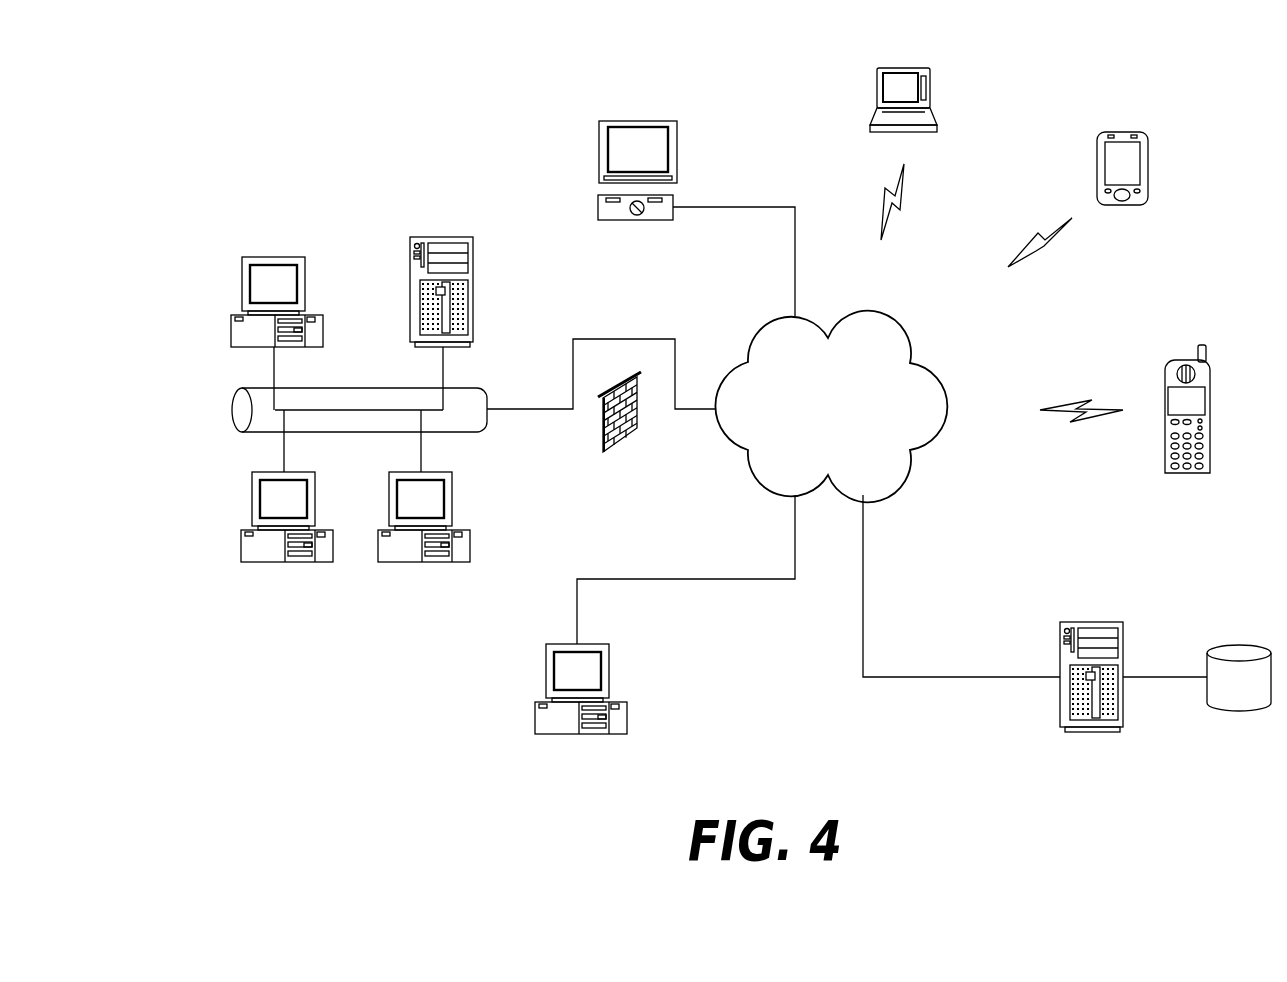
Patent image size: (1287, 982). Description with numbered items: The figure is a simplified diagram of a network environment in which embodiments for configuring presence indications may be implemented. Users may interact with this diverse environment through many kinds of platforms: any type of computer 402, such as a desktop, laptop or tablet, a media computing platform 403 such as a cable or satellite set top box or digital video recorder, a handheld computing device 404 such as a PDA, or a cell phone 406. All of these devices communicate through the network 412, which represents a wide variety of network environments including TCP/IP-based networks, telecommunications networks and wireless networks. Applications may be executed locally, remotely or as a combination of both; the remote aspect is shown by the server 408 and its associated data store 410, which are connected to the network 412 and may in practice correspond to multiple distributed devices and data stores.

The computer 402 is at (536, 378).
The media computing platform 403 is at (585, 170).
The handheld computing device 404 is at (1071, 146).
The cell phone 406 is at (1136, 397).
The server 408 is at (1043, 654).
The data store 410 is at (1201, 655).
The network 412 is at (801, 396).